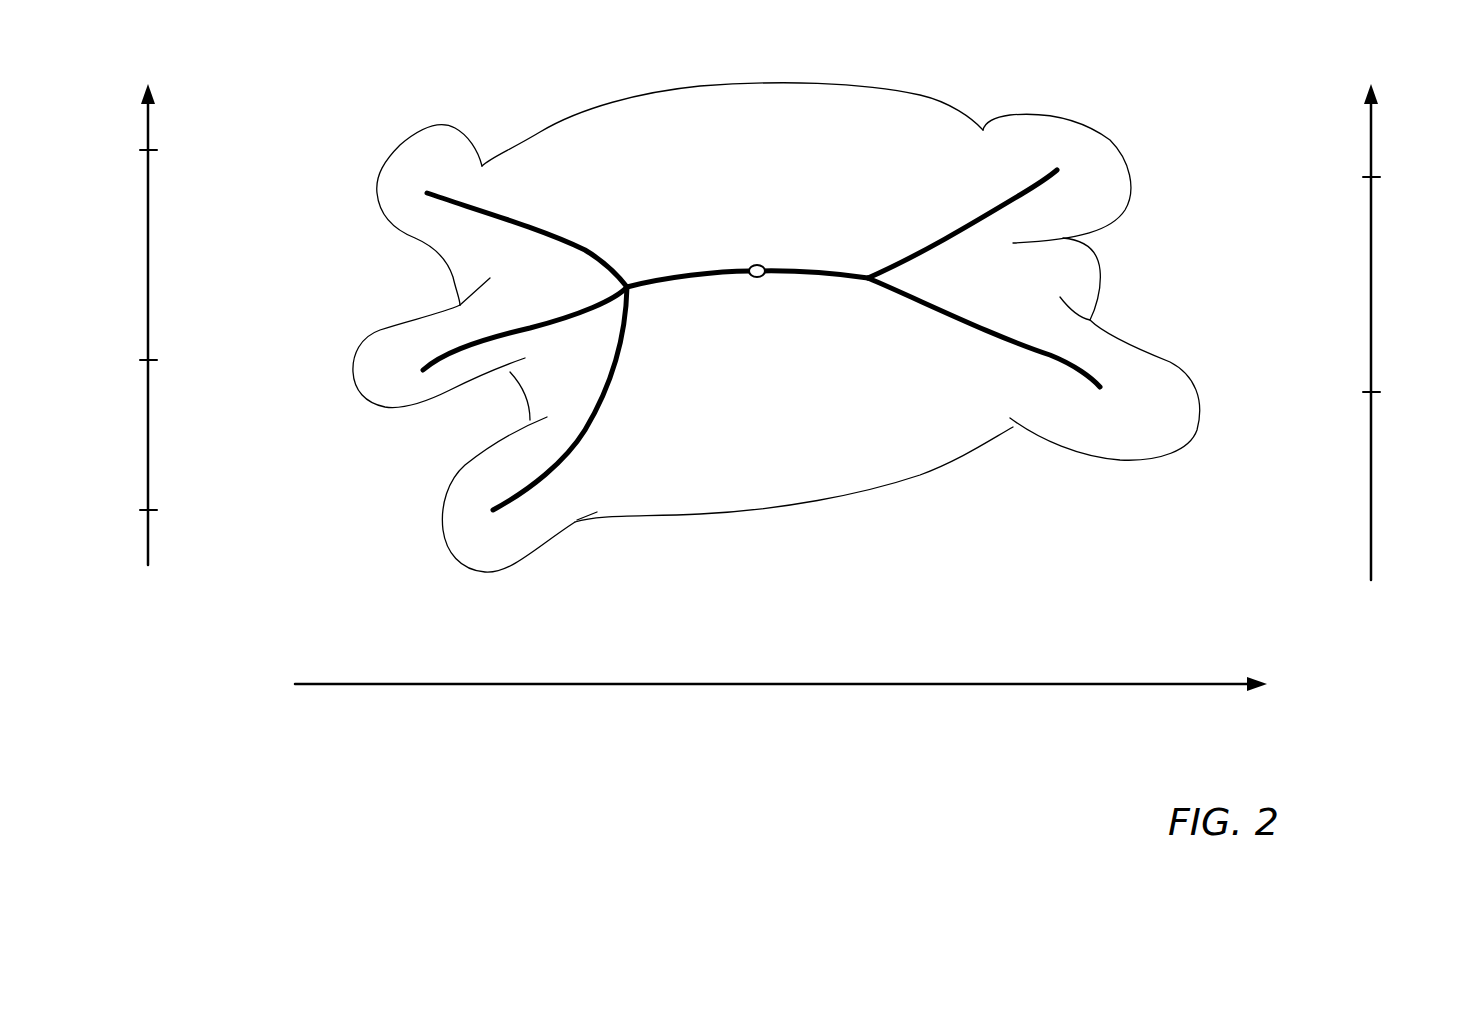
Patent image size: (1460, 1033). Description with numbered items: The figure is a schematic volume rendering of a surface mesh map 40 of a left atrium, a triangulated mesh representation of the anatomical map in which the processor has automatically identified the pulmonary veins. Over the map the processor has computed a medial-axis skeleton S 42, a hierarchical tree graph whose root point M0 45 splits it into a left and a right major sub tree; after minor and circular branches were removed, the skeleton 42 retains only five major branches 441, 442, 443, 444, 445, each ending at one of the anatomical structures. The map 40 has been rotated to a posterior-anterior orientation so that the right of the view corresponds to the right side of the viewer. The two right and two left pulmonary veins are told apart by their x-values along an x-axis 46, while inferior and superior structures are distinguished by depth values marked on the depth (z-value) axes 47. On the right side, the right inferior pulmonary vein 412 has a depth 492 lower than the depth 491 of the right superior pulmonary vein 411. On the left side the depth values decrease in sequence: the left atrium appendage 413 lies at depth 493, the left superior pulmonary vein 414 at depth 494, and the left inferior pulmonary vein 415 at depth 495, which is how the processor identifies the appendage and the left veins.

The surface mesh map 40 is at (808, 560).
The skeleton 42 is at (722, 210).
The root point 45 is at (757, 278).
The x-axis 46 is at (1017, 688).
The depth axes 47 is at (148, 566).
The right superior pulmonary vein 411 is at (1123, 210).
The right inferior pulmonary vein 412 is at (1203, 417).
The left atrium appendage 413 is at (377, 178).
The left superior pulmonary vein 414 is at (363, 343).
The left inferior pulmonary vein 415 is at (443, 538).
The major branch 441 is at (1027, 193).
The major branch 442 is at (1070, 367).
The major branch 443 is at (440, 193).
The major branch 444 is at (460, 340).
The major branch 445 is at (505, 505).
The depth of right superior pulmonary vein 491 is at (1396, 178).
The depth of right inferior pulmonary vein 492 is at (1396, 393).
The depth of left atrium appendage 493 is at (122, 152).
The depth of left superior pulmonary vein 494 is at (122, 362).
The depth of left inferior pulmonary vein 495 is at (122, 512).